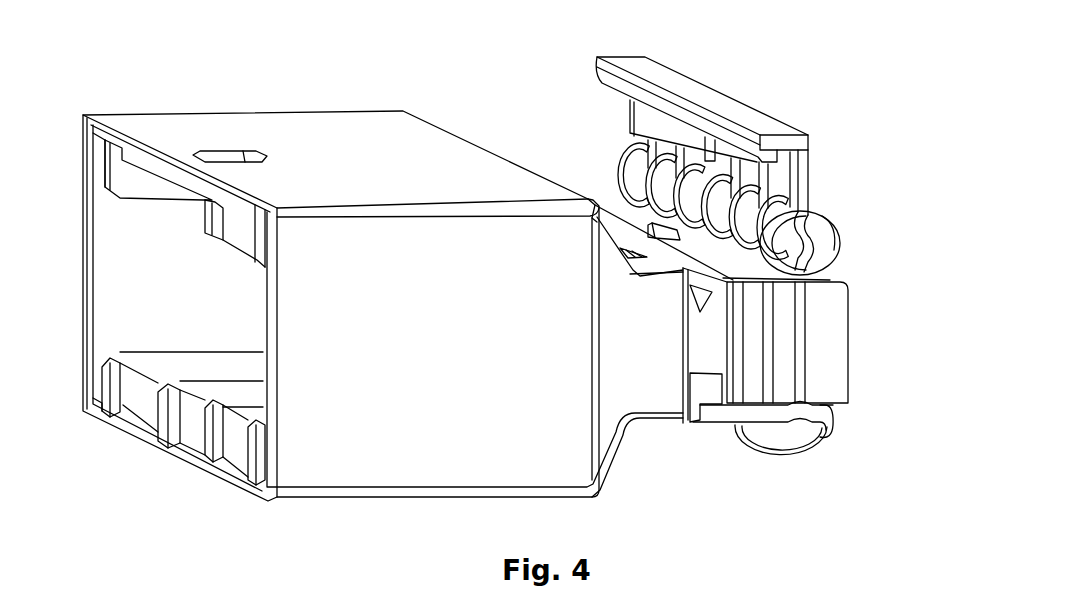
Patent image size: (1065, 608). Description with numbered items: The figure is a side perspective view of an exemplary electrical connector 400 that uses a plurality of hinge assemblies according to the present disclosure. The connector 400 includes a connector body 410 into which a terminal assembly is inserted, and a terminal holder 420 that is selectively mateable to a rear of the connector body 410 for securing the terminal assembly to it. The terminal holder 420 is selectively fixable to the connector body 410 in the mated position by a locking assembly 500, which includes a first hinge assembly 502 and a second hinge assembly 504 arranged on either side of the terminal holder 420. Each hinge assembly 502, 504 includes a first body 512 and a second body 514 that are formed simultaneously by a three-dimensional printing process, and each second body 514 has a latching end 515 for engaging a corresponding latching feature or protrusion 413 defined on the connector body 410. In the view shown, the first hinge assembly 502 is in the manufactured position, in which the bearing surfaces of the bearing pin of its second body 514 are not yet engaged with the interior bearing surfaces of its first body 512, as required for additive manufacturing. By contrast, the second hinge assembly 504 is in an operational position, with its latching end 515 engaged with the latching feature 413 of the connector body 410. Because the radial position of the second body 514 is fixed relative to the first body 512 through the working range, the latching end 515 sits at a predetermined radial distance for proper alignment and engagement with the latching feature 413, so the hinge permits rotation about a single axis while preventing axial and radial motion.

The electrical connector 400 is at (140, 42).
The connector body 410 is at (317, 133).
The latching feature 413 is at (677, 277).
The locking assembly 500 is at (588, 102).
The first hinge assembly 502 is at (777, 90).
The second hinge assembly 504 is at (855, 415).
The first body 512 is at (827, 247).
The second body 514 is at (707, 423).
The latching end 515 is at (787, 140).
The terminal holder 420 is at (840, 328).